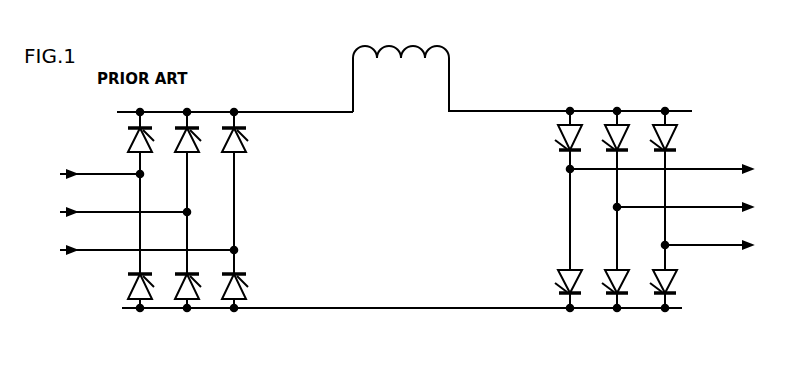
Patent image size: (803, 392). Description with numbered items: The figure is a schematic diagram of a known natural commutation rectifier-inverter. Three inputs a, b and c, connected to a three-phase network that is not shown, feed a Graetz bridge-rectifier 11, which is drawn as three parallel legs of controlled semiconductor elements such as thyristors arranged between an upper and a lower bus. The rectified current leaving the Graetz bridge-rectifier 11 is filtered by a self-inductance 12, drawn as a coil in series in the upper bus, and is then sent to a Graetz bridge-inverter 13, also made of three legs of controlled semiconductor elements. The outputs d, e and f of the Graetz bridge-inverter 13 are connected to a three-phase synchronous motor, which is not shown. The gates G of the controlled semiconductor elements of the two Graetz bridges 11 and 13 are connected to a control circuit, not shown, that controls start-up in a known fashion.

The Graetz bridge-rectifier 11 is at (252, 208).
The self-inductance 12 is at (402, 62).
The Graetz bridge-inverter 13 is at (556, 207).